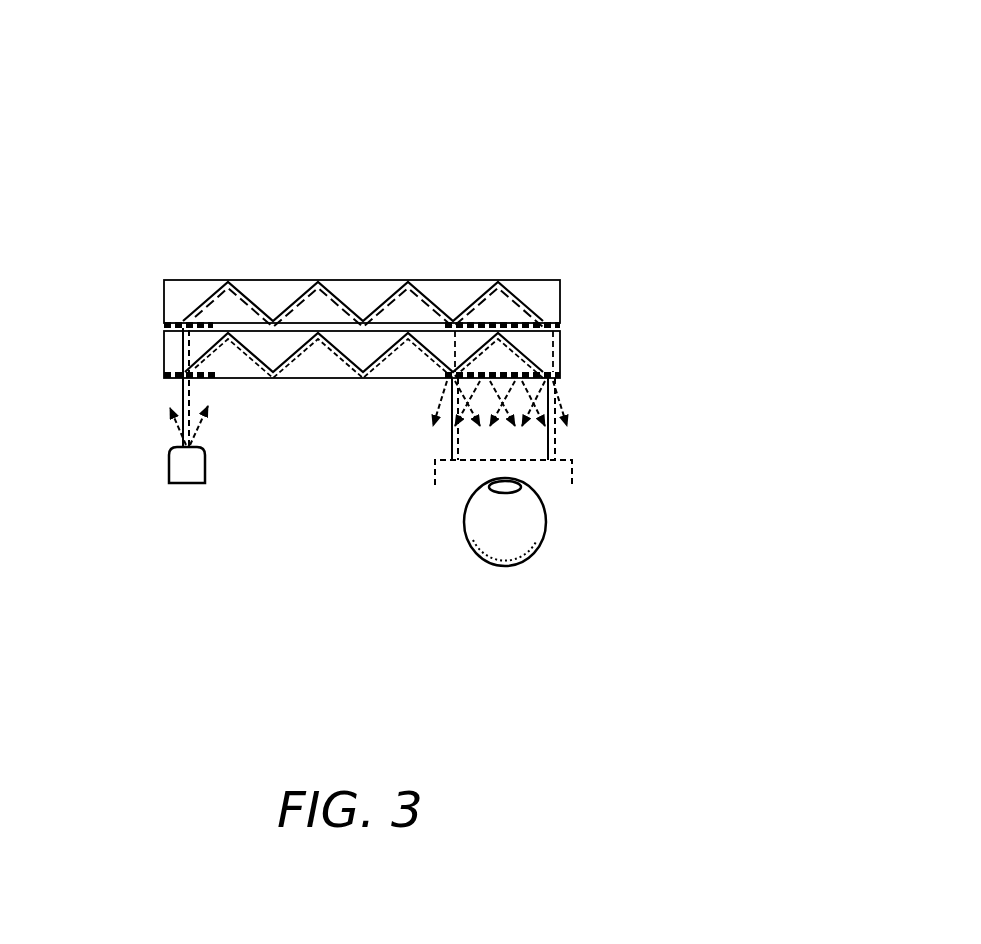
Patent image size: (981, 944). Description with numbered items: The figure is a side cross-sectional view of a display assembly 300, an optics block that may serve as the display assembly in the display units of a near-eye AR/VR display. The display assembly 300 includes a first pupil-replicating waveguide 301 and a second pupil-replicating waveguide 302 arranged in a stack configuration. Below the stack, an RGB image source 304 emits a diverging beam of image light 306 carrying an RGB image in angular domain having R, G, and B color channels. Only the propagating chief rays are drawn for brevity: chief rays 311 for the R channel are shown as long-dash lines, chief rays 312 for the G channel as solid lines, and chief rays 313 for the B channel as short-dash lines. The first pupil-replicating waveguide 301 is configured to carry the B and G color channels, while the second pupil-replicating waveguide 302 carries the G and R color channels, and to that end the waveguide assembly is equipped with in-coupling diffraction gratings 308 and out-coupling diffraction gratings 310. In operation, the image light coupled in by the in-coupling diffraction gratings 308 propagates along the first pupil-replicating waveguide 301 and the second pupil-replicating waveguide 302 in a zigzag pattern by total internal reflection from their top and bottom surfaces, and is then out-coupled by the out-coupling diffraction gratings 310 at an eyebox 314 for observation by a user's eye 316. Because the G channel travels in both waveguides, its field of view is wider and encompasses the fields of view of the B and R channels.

The display assembly 300 is at (572, 116).
The first pupil-replicating waveguide 301 is at (452, 280).
The second pupil-replicating waveguide 302 is at (383, 378).
The RGB image source 304 is at (169, 469).
The image light 306 is at (157, 413).
The in-coupling diffraction gratings 308 is at (157, 322).
The out-coupling diffraction gratings 310 is at (567, 326).
The chief rays for R channel 311 is at (241, 280).
The chief rays for G channel 312 is at (340, 292).
The chief rays for B channel 313 is at (302, 355).
The eyebox 314 is at (573, 480).
The user's eye 316 is at (548, 517).